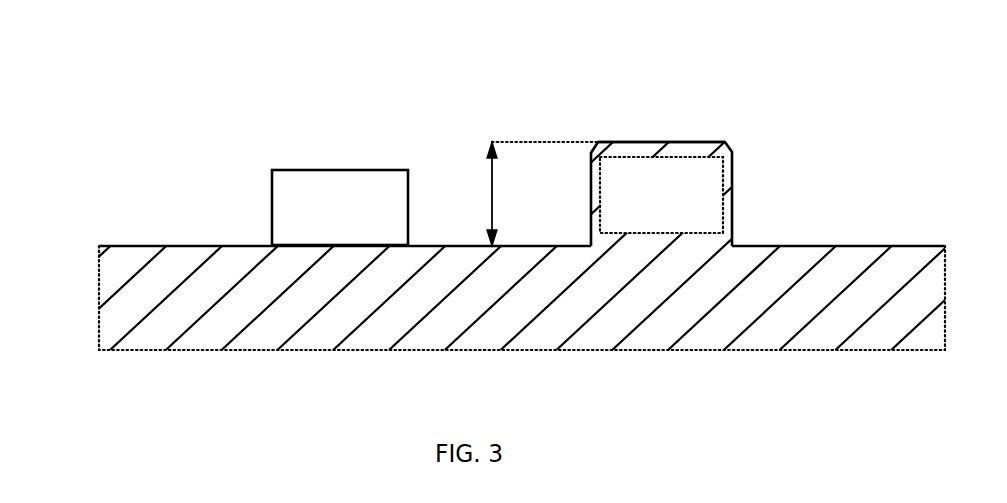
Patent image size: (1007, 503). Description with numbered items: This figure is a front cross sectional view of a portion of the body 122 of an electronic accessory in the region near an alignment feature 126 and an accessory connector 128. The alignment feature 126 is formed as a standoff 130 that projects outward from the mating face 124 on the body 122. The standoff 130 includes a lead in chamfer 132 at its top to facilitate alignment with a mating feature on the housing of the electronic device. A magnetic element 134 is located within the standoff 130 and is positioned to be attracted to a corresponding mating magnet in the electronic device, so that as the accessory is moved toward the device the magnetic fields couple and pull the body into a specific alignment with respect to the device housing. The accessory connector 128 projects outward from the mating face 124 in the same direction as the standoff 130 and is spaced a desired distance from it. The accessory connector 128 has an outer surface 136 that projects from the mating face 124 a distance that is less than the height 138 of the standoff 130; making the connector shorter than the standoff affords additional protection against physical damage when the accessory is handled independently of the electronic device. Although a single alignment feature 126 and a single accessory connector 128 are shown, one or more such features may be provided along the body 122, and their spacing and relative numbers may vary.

The body 122 is at (503, 245).
The mating face 124 is at (852, 244).
The alignment feature 126 is at (703, 130).
The accessory connector 128 is at (323, 150).
The standoff 130 is at (732, 205).
The lead in chamfer 132 is at (693, 141).
The magnetic element 134 is at (670, 193).
The outer surface 136 is at (297, 168).
The height of the standoff 138 is at (495, 208).